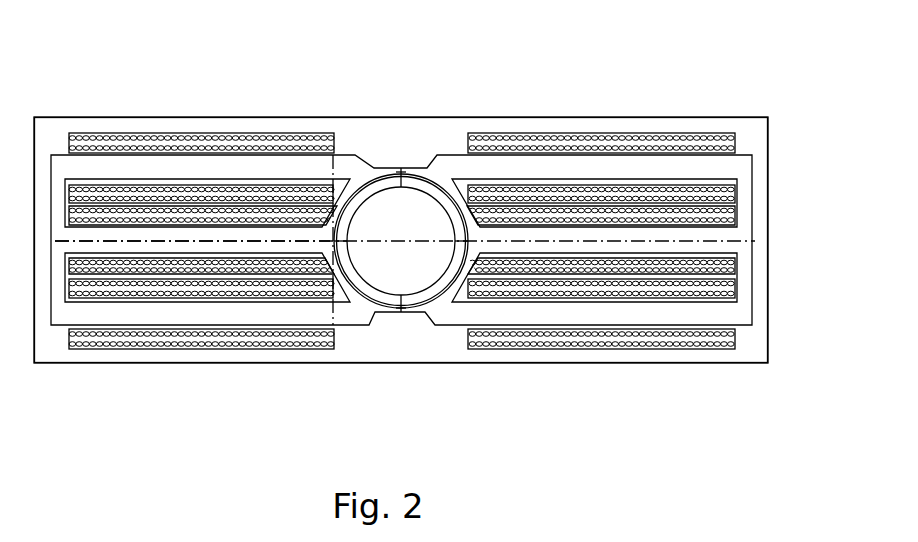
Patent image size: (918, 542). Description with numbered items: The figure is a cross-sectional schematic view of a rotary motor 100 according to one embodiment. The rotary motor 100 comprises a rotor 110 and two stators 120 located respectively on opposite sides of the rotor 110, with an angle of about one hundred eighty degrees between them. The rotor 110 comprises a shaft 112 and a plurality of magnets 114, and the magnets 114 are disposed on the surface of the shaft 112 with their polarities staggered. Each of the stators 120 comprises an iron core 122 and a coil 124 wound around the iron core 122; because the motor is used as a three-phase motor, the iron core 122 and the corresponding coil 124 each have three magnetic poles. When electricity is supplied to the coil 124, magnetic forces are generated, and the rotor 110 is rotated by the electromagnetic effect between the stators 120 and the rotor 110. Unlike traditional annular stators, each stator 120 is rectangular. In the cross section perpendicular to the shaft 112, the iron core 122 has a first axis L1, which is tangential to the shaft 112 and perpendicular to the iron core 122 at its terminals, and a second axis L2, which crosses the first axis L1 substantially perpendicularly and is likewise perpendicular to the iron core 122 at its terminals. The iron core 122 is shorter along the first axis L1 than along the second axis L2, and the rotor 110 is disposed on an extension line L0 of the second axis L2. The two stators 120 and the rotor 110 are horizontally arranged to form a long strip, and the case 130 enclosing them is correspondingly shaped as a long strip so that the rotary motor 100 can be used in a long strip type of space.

The rotary motor 100 is at (163, 93).
The rotor 110 is at (401, 312).
The shaft 112 is at (383, 277).
The magnets 114 is at (420, 297).
The stators 120 is at (401, 181).
The iron core 122 is at (490, 167).
The coil 124 is at (549, 193).
The case 130 is at (407, 117).
The extension line L0 is at (395, 242).
The first axis L1 is at (333, 170).
The second axis L2 is at (88, 241).